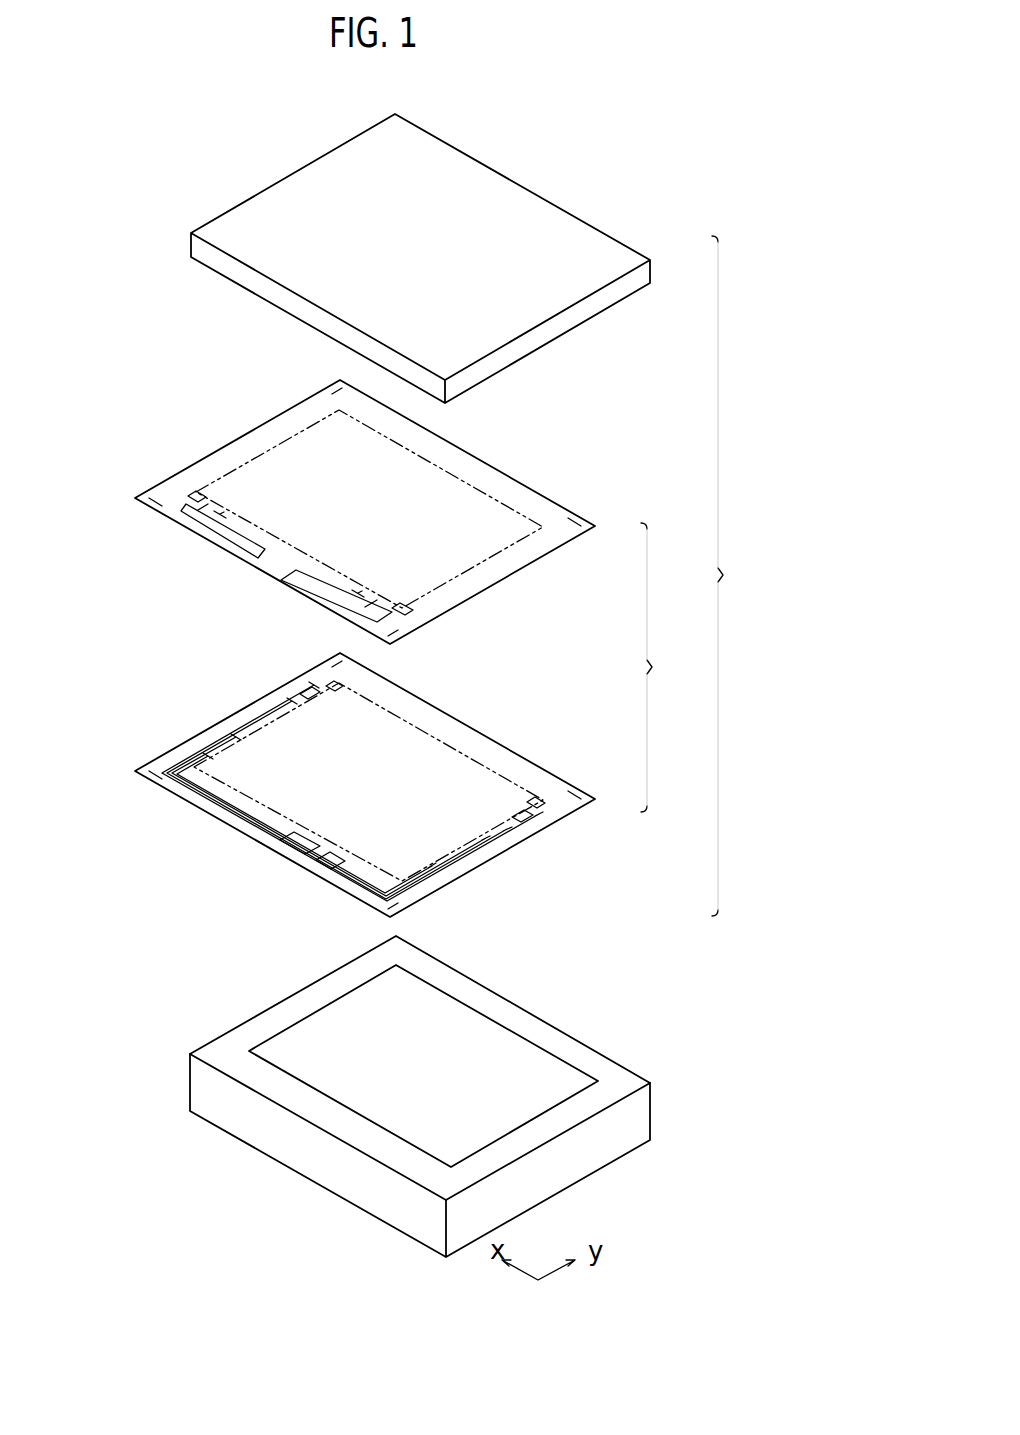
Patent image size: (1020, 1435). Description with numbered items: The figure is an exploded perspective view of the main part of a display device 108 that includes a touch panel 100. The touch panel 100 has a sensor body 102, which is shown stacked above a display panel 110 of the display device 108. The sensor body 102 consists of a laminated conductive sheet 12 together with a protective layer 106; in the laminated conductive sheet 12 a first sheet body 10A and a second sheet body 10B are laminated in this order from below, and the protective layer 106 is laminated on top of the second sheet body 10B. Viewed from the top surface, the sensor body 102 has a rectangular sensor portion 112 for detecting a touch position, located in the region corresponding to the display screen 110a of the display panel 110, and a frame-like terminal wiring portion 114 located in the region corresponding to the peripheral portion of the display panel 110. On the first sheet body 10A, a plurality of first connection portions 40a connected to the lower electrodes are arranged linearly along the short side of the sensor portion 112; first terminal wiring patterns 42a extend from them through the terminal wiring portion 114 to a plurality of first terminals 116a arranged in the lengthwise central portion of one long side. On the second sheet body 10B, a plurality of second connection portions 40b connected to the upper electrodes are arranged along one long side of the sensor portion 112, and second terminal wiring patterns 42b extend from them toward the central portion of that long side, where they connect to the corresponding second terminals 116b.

The touch panel 100 is at (177, 344).
The sensor body 102 is at (739, 576).
The protective layer 106 is at (566, 212).
The display device 108 is at (456, 1096).
The display panel 110 is at (592, 1060).
The display screen 110a is at (517, 1050).
The sensor portion 112 is at (445, 470).
The terminal wiring portion 114 is at (501, 480).
The first terminals 116a is at (270, 842).
The second terminals 116b is at (245, 553).
The first sheet body 10A is at (378, 788).
The second sheet body 10B is at (375, 522).
The laminated conductive sheet 12 is at (663, 667).
The first connection portions 40a is at (330, 688).
The second connection portions 40b is at (190, 496).
The first terminal wiring patterns 42a is at (300, 685).
The second terminal wiring patterns 42b is at (200, 512).